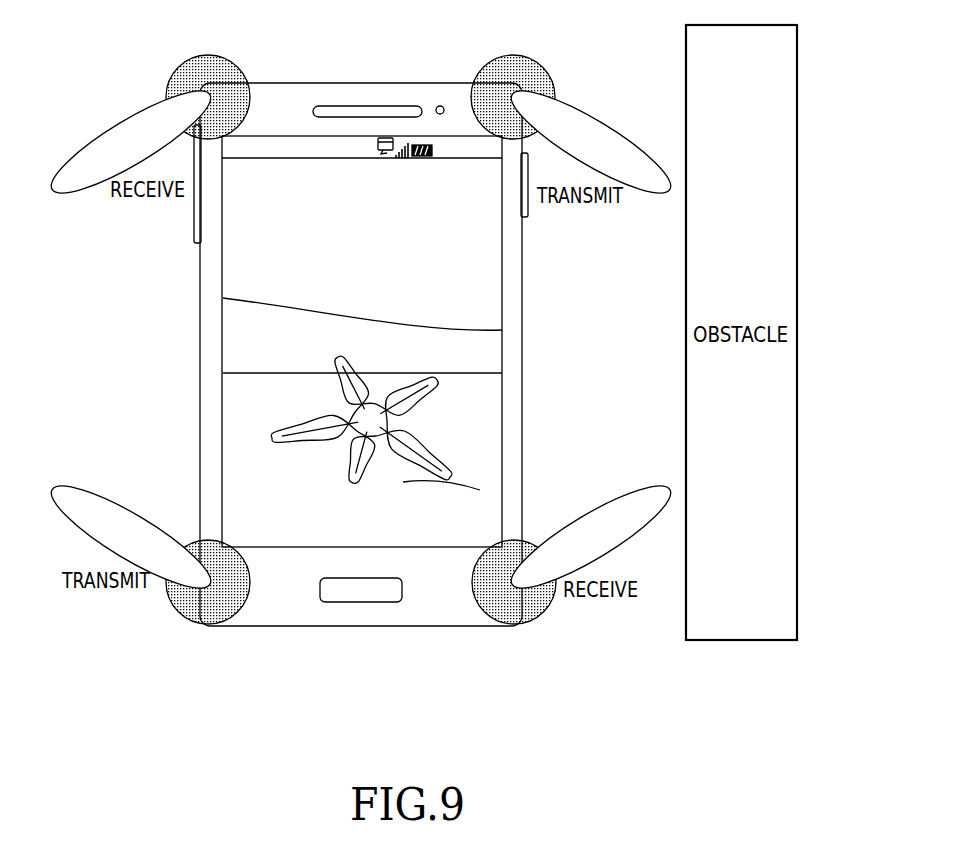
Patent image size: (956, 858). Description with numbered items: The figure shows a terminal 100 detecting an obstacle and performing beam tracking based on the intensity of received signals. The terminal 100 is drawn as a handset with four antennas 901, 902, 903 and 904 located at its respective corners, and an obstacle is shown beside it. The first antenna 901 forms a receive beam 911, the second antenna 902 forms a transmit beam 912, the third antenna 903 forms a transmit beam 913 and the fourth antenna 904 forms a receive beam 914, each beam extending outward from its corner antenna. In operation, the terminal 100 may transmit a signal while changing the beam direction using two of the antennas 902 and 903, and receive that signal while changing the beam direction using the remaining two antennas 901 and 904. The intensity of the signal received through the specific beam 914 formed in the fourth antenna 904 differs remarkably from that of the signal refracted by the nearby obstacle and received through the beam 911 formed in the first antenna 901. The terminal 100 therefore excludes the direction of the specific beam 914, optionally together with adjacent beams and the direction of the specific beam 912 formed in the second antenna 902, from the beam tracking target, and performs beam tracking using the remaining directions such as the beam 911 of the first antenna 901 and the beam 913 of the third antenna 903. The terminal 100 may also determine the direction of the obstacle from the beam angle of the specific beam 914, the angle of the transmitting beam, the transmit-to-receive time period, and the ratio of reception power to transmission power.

The terminal 100 is at (522, 338).
The first antenna 901 is at (213, 55).
The second antenna 902 is at (528, 57).
The third antenna 903 is at (198, 625).
The fourth antenna 904 is at (528, 623).
The receive beam 911 is at (123, 126).
The transmit beam 912 is at (621, 141).
The transmit beam 913 is at (132, 508).
The receive beam 914 is at (610, 506).